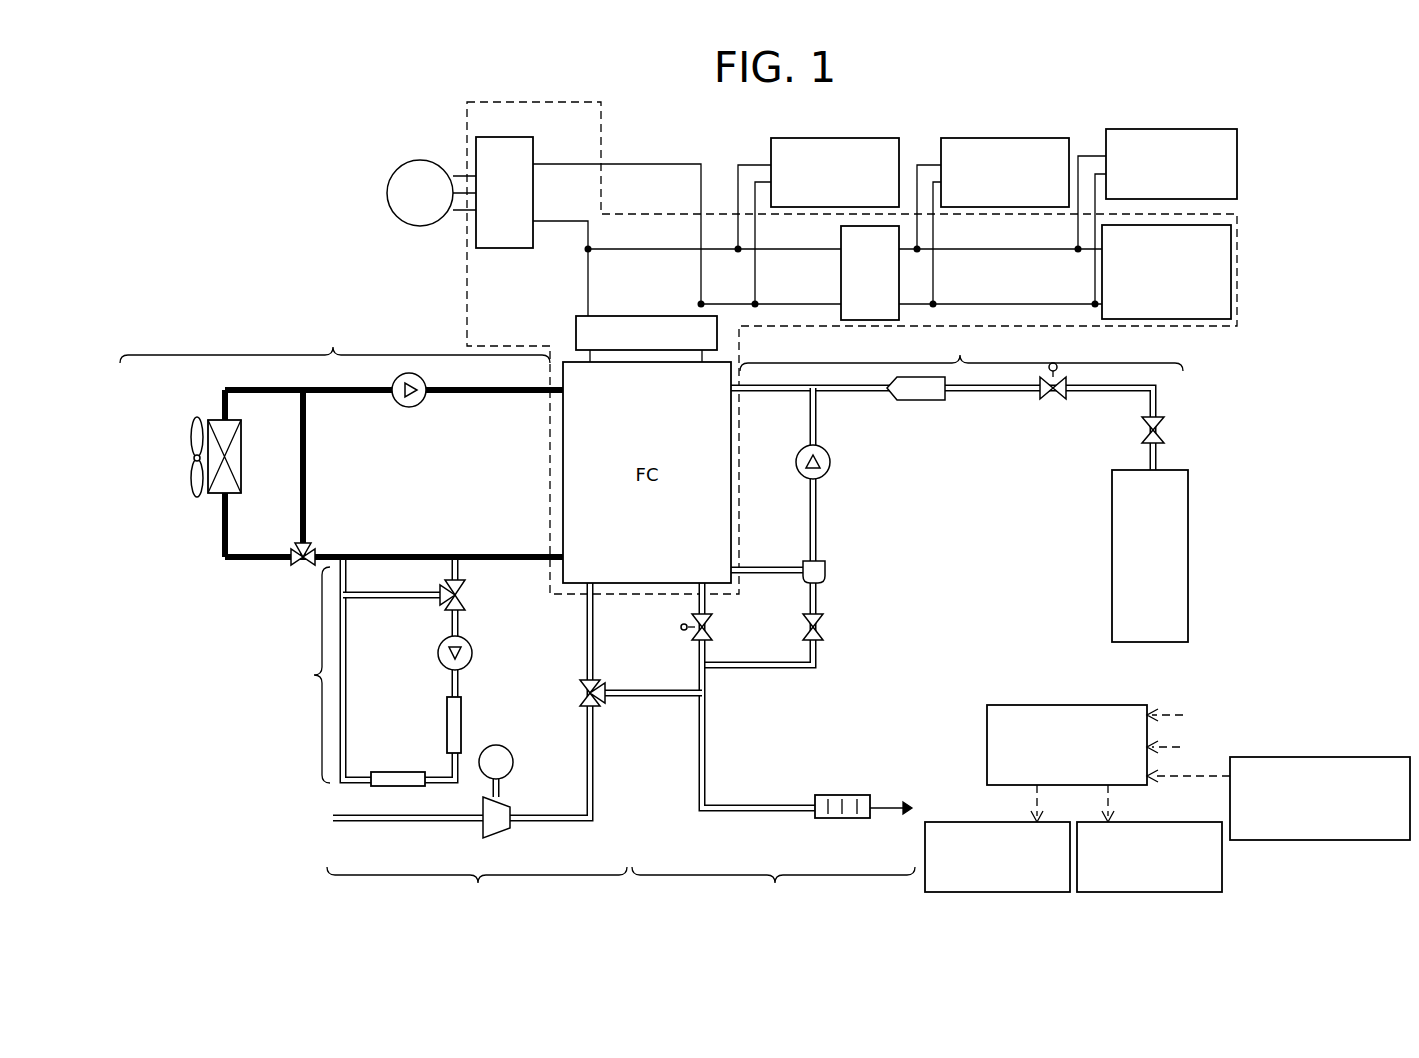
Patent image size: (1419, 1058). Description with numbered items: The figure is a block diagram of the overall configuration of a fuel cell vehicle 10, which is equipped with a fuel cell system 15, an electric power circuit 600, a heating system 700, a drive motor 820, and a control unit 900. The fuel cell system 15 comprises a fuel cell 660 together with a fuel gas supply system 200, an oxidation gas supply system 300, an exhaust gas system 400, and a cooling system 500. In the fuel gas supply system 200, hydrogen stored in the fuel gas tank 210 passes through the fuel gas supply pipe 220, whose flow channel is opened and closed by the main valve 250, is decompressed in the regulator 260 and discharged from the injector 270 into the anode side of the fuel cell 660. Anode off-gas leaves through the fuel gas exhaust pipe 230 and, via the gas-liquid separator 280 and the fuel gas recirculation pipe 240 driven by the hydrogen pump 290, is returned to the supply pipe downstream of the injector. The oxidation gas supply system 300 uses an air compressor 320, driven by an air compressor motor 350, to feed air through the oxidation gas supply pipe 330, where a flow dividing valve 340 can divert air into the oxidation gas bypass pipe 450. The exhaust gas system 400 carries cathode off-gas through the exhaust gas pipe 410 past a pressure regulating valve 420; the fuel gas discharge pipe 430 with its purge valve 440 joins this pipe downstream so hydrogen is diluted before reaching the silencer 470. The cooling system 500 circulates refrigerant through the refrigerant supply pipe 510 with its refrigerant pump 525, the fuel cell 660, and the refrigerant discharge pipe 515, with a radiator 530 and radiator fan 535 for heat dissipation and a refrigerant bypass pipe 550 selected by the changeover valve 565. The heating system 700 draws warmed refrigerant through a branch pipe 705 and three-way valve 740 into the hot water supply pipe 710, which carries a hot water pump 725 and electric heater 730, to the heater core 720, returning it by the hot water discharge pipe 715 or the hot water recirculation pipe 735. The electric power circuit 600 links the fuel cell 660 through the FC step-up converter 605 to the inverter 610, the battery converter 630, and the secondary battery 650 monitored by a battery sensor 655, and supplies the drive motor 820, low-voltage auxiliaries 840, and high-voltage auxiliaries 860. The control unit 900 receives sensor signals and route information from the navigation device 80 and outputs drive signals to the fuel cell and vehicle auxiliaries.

The fuel cell vehicle 10 is at (1275, 112).
The fuel cell system 15 is at (266, 292).
The navigation device 80 is at (1380, 756).
The fuel gas supply system 200 is at (961, 351).
The fuel gas tank 210 is at (1190, 493).
The fuel gas supply pipe 220 is at (980, 394).
The fuel gas exhaust pipe 230 is at (768, 568).
The fuel gas recirculation pipe 240 is at (817, 417).
The main valve 250 is at (1167, 435).
The regulator 260 is at (1054, 402).
The injector 270 is at (927, 402).
The gas-liquid separator 280 is at (826, 572).
The hydrogen pump 290 is at (830, 465).
The oxidation gas supply system 300 is at (477, 890).
The air compressor 320 is at (483, 830).
The oxidation gas supply pipe 330 is at (545, 825).
The flow dividing valve 340 is at (593, 680).
The air compressor motor 350 is at (514, 760).
The exhaust gas system 400 is at (773, 890).
The exhaust gas pipe 410 is at (760, 800).
The pressure regulating valve 420 is at (715, 627).
The fuel gas discharge pipe 430 is at (778, 672).
The purge valve 440 is at (826, 630).
The oxidation gas bypass pipe 450 is at (648, 705).
The silencer 470 is at (862, 792).
The cooling system 500 is at (335, 340).
The refrigerant supply pipe 510 is at (507, 396).
The refrigerant discharge pipe 515 is at (507, 550).
The refrigerant pump 525 is at (409, 408).
The radiator 530 is at (243, 472).
The radiator fan 535 is at (190, 452).
The refrigerant bypass pipe 550 is at (308, 468).
The changeover valve 565 is at (317, 553).
The electric power circuit 600 is at (463, 303).
The FC step-up converter 605 is at (603, 316).
The inverter 610 is at (519, 137).
The battery converter 630 is at (841, 286).
The secondary battery 650 is at (1232, 270).
The battery sensor 655 is at (1148, 129).
The fuel cell 660 is at (568, 360).
The heating system 700 is at (296, 675).
The branch pipe 705 is at (465, 568).
The hot water supply pipe 710 is at (460, 622).
The hot water discharge pipe 715 is at (347, 688).
The heater core 720 is at (400, 768).
The hot water pump 725 is at (472, 655).
The electric heater 730 is at (462, 710).
The hot water recirculation pipe 735 is at (395, 600).
The three-way valve 740 is at (468, 596).
The drive motor 820 is at (406, 162).
The low-voltage auxiliaries 840 is at (995, 136).
The high-voltage auxiliaries 860 is at (838, 136).
The control unit 900 is at (1075, 705).